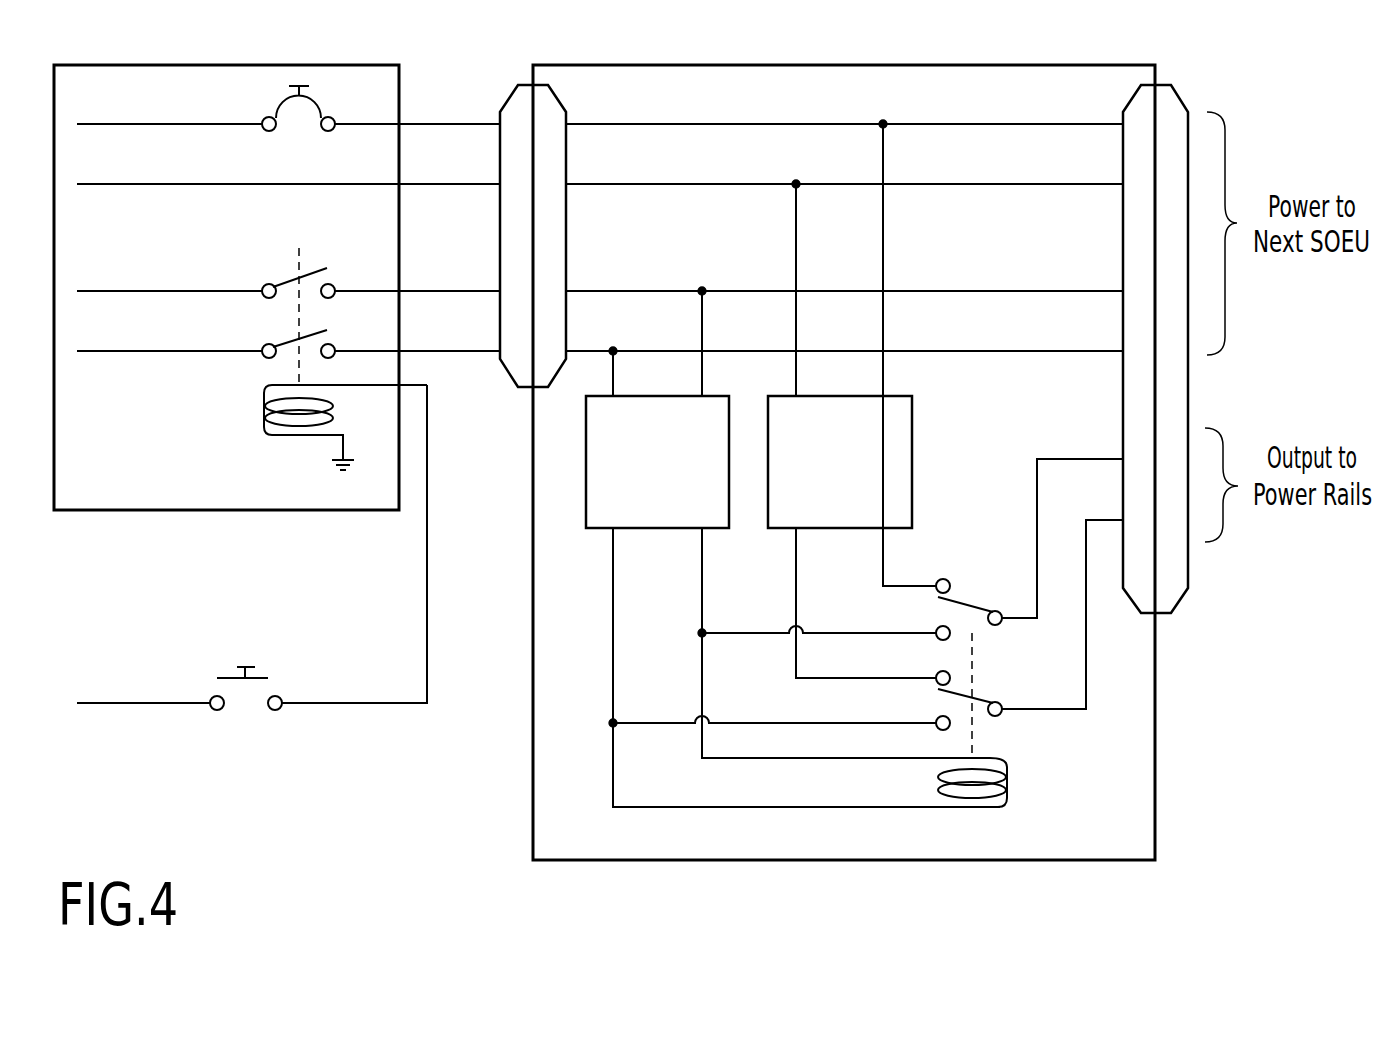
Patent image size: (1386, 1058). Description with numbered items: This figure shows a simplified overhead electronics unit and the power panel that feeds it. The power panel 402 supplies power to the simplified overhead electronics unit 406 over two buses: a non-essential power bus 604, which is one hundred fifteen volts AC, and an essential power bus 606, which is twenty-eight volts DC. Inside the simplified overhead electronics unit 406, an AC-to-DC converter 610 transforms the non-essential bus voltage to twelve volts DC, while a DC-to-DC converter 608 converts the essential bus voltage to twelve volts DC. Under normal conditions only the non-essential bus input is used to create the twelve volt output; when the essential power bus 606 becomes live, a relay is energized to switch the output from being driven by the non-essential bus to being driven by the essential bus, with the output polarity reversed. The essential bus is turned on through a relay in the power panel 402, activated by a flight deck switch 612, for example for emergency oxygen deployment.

The power panel 402 is at (297, 510).
The simplified overhead electronics unit 406 is at (881, 462).
The non-essential power bus 604 is at (357, 153).
The essential power bus 606 is at (368, 318).
The DC-to-DC converter 608 is at (658, 530).
The AC-to-DC converter 610 is at (843, 530).
The flight deck O2 deploy switch 612 is at (278, 688).